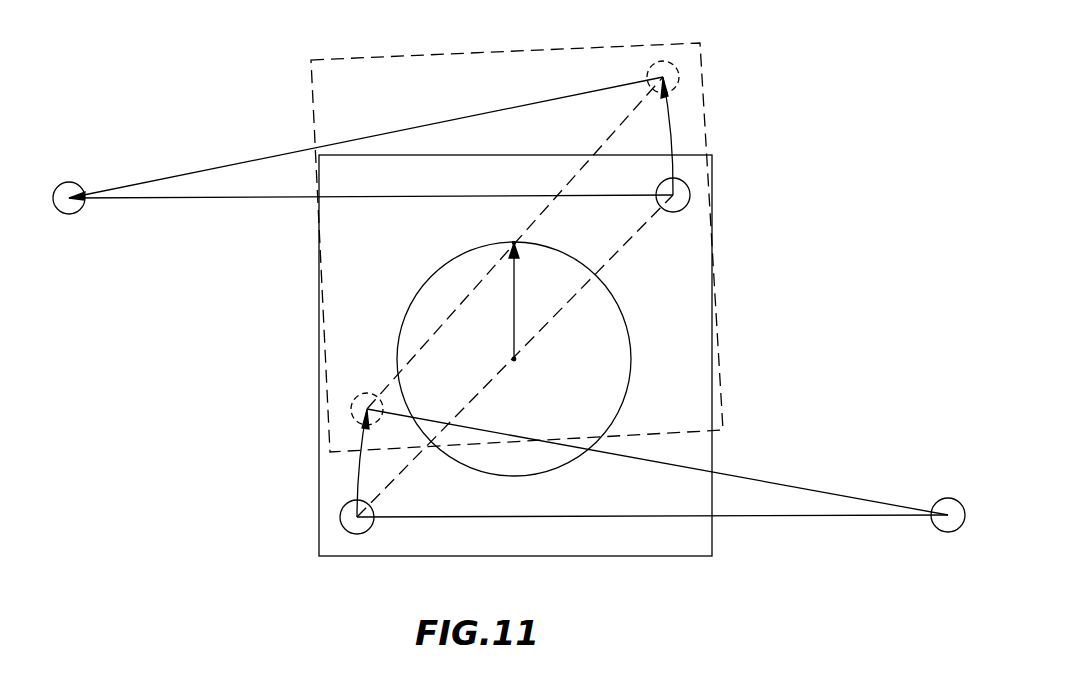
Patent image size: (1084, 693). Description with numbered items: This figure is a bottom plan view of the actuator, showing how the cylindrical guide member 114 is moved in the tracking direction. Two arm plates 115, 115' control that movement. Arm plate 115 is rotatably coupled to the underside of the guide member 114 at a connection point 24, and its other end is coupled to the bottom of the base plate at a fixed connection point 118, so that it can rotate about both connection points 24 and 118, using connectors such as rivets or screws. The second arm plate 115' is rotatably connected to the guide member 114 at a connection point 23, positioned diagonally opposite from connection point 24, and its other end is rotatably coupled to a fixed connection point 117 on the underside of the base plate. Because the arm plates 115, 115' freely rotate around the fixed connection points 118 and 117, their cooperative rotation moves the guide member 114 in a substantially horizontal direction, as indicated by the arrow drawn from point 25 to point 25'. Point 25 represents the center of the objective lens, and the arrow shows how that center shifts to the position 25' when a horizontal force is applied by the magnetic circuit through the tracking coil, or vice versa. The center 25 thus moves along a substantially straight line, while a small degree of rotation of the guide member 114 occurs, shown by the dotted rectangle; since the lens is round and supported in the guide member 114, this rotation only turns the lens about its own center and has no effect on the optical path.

The cylindrical guide member 114 is at (693, 305).
The connection point 23 is at (690, 192).
The connection point 24 is at (340, 514).
The center of objective lens 25 is at (514, 359).
The center position of objective lens 25' is at (556, 231).
The arm plate 115 is at (652, 487).
The second arm plate 115' is at (371, 166).
The connection point 117 is at (84, 184).
The connection point 118 is at (950, 532).